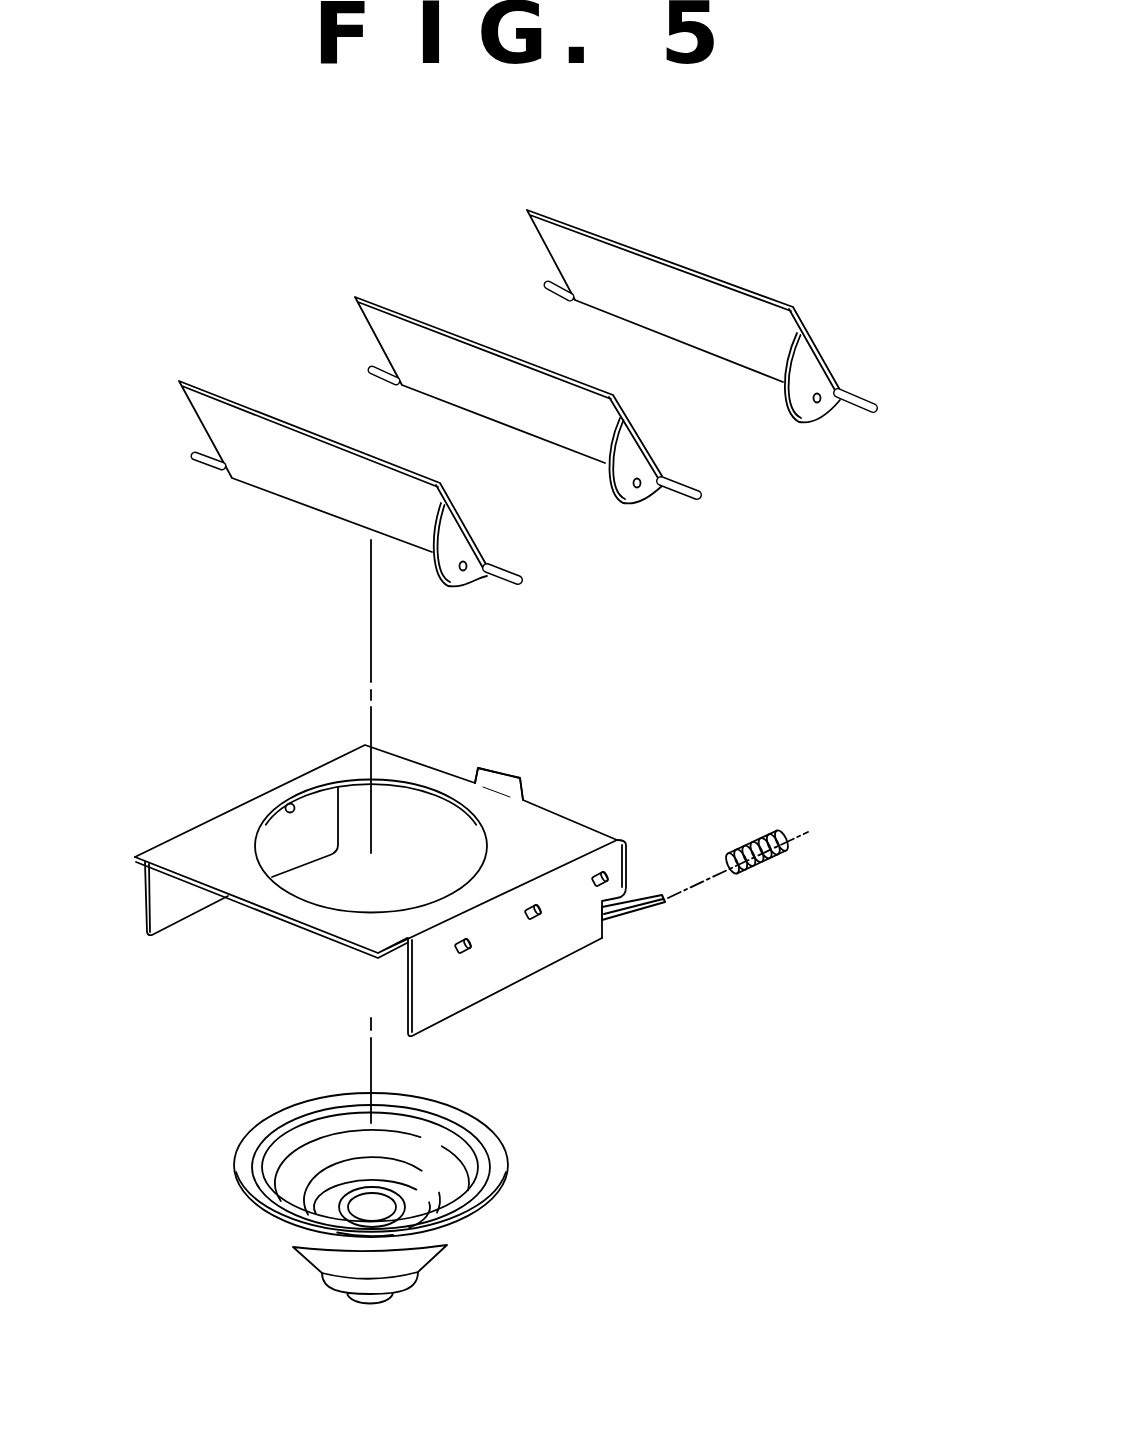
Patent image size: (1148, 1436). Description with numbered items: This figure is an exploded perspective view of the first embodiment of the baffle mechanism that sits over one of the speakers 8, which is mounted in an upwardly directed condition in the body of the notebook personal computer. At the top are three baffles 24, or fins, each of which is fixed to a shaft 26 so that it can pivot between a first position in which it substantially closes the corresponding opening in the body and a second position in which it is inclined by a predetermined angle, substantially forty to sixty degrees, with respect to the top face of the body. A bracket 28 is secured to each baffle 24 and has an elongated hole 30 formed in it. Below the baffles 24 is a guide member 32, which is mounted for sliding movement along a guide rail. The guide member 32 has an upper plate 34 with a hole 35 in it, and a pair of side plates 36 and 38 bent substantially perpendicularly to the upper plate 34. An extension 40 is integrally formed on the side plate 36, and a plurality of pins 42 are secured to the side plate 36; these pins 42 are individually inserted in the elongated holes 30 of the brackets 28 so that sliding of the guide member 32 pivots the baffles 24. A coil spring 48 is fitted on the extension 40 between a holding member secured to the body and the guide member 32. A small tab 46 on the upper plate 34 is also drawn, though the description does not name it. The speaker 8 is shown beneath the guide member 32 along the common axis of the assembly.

The speaker 8 is at (498, 1192).
The baffle 24 is at (247, 413).
The shaft 26 is at (522, 584).
The bracket 28 is at (437, 567).
The elongated hole 30 is at (466, 572).
The guide member 32 is at (408, 879).
The upper plate 34 is at (282, 900).
The hole 35 is at (293, 803).
The side plate 36 is at (462, 998).
The side plate 38 is at (160, 900).
The extension 40 is at (642, 917).
The pin 42 is at (601, 870).
The mounting tab 46 is at (492, 776).
The coil spring 48 is at (760, 840).